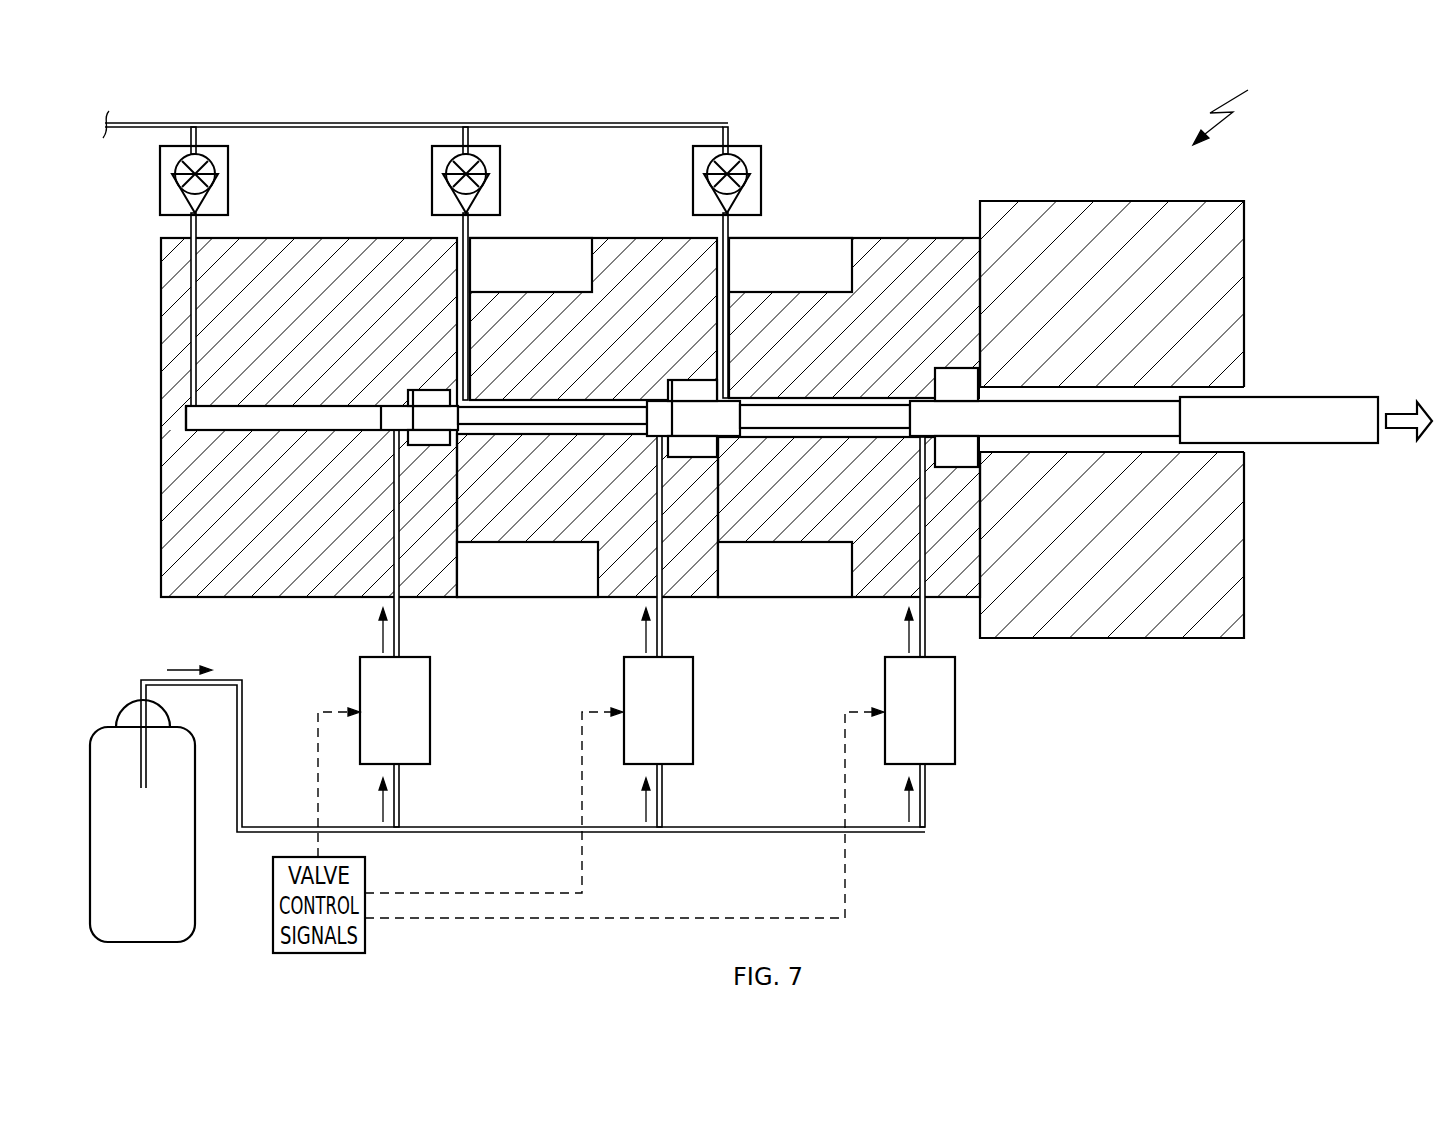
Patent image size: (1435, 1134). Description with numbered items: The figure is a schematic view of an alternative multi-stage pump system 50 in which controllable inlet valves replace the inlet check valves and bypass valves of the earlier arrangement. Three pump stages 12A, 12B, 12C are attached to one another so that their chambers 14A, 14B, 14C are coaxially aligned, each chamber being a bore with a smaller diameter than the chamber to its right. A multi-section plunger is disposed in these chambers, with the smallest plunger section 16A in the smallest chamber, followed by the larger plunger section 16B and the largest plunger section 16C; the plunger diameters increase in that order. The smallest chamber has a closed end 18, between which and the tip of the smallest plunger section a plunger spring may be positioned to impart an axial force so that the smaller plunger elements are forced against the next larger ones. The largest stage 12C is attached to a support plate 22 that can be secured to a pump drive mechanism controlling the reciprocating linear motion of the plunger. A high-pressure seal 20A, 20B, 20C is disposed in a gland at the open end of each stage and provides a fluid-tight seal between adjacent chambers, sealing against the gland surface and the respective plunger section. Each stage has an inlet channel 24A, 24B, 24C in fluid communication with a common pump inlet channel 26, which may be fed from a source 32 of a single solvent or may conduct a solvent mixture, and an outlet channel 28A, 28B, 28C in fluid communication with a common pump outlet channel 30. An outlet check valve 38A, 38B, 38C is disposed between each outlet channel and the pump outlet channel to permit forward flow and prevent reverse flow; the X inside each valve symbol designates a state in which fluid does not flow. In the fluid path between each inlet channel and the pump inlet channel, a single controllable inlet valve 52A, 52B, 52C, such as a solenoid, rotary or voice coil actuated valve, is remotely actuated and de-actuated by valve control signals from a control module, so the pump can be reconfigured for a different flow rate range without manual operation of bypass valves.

The pump stage 12A is at (303, 342).
The pump stage 12B is at (571, 342).
The pump stage 12C is at (833, 342).
The chamber 14A is at (185, 428).
The chamber 14B is at (510, 407).
The chamber 14C is at (782, 405).
The plunger section 16A is at (396, 412).
The plunger section 16B is at (652, 412).
The plunger section 16C is at (922, 406).
The closed end 18 is at (185, 412).
The high-pressure seal 20A is at (430, 447).
The high-pressure seal 20B is at (690, 458).
The high-pressure seal 20C is at (955, 468).
The support plate 22 is at (1090, 312).
The inlet channel 24A is at (394, 532).
The inlet channel 24B is at (656, 532).
The inlet channel 24C is at (919, 532).
The pump inlet channel 26 is at (292, 827).
The outlet channel 28A is at (198, 273).
The outlet channel 28B is at (470, 273).
The outlet channel 28C is at (730, 273).
The pump outlet channel 30 is at (150, 122).
The source 32 is at (128, 850).
The outlet check valve 38A is at (229, 179).
The outlet check valve 38B is at (501, 179).
The outlet check valve 38C is at (763, 179).
The multi-stage system 50 is at (1234, 105).
The controllable inlet valve 52A is at (372, 726).
The controllable inlet valve 52B is at (635, 726).
The controllable inlet valve 52C is at (897, 726).